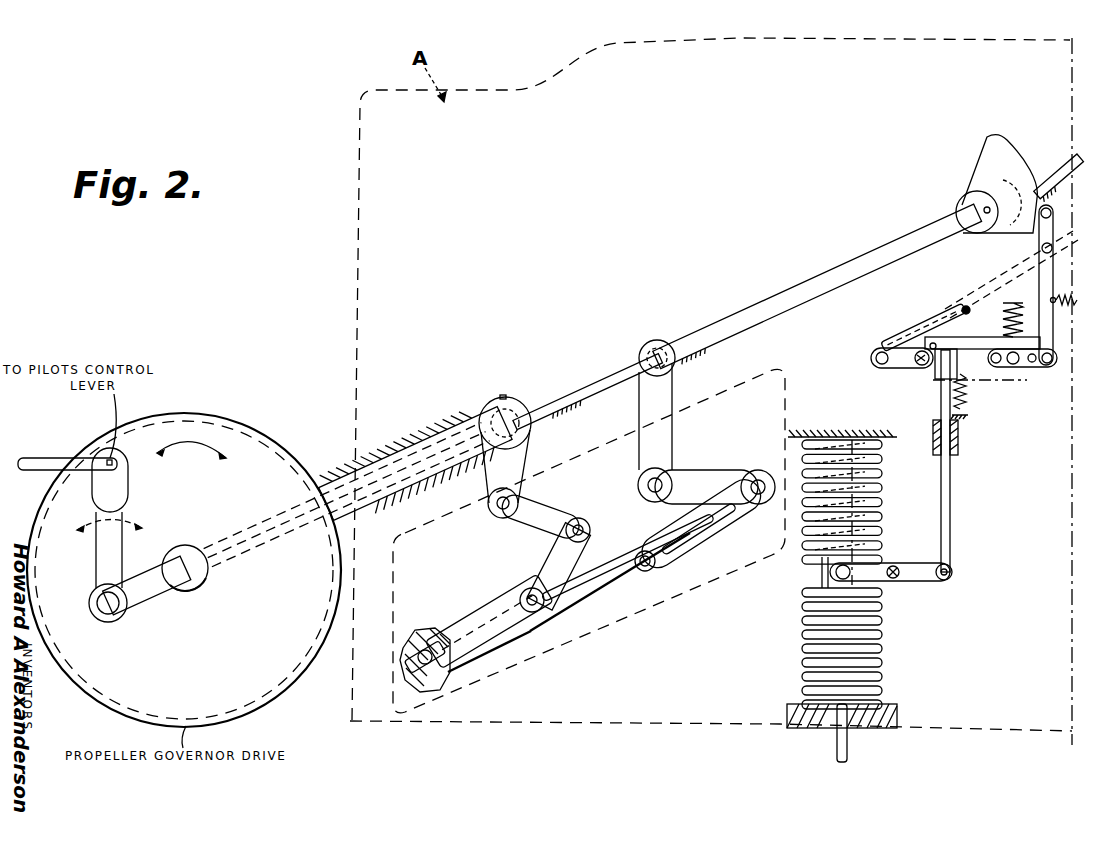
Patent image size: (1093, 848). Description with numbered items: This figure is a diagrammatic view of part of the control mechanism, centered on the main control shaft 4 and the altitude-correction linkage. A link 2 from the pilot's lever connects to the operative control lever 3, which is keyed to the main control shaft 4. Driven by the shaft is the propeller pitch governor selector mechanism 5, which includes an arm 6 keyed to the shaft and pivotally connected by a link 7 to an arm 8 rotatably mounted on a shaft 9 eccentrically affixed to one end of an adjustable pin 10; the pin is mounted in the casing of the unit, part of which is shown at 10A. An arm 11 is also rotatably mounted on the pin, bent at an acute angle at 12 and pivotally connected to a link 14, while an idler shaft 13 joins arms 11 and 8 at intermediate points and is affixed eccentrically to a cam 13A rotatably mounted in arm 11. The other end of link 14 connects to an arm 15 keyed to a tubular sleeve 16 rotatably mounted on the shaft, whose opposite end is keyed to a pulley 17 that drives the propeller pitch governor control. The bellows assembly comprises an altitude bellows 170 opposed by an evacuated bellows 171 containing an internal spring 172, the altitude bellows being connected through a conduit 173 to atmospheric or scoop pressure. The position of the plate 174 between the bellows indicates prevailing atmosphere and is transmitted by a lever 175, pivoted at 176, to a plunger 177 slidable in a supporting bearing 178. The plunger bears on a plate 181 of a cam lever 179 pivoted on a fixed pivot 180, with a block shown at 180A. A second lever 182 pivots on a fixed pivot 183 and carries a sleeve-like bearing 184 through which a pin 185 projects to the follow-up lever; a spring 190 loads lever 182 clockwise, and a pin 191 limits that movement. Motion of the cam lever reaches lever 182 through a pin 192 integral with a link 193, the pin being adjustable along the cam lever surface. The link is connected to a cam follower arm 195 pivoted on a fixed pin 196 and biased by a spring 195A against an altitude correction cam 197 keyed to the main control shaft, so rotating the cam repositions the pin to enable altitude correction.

The link 2 is at (42, 459).
The operative control lever 3 is at (97, 569).
The main control shaft 4 is at (843, 265).
The propeller pitch governor selector mechanism 5 is at (572, 603).
The arm 6 is at (673, 388).
The link 7 is at (706, 472).
The arm 8 is at (716, 534).
The shaft 9 is at (649, 572).
The adjustable pin 10 is at (430, 633).
The casing 10A is at (403, 663).
The arm 11 is at (488, 615).
The bend 12 is at (538, 565).
The idler shaft 13 is at (617, 552).
The cam 13A is at (532, 613).
The link 14 is at (550, 509).
The arm 15 is at (531, 451).
The tubular sleeve 16 is at (476, 418).
The pulley 17 is at (247, 700).
The altitude bellows 170 is at (880, 669).
The evacuated bellows 171 is at (883, 496).
The internal spring 172 is at (856, 437).
The conduit 173 is at (836, 755).
The plate 174 is at (830, 568).
The lever 175 is at (920, 566).
The pivot 176 is at (896, 580).
The plunger 177 is at (950, 539).
The supporting bearing 178 is at (959, 446).
The cam lever 179 is at (965, 398).
The fixed pivot 180 is at (1030, 372).
The block 180A is at (957, 384).
The plate 181 is at (930, 346).
The second lever 182 is at (882, 366).
The fixed pivot 183 is at (920, 366).
The sleeve-like bearing 184 is at (918, 336).
The pin 185 is at (964, 306).
The spring 190 is at (1010, 325).
The pin 191 is at (1040, 368).
The pin 192 is at (1014, 368).
The link 193 is at (1036, 350).
The cam follower arm 195 is at (1043, 268).
The spring 195A is at (1052, 300).
The fixed pin 196 is at (1041, 248).
The cam 197 is at (993, 142).